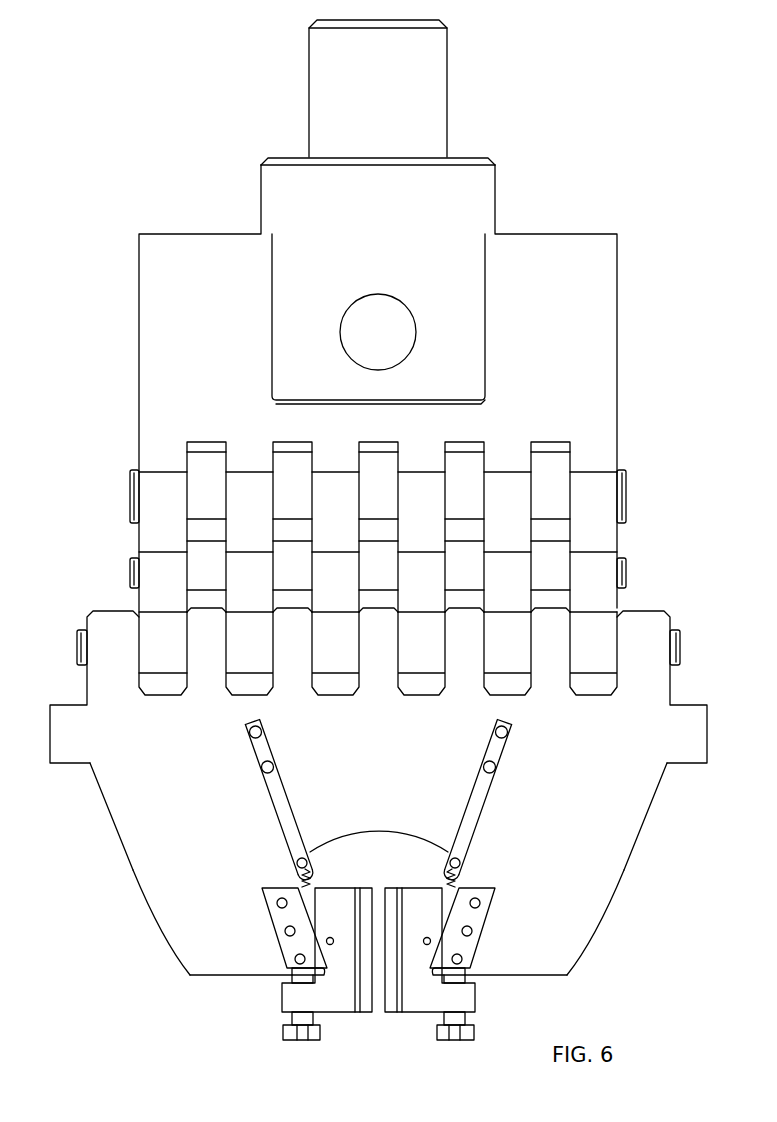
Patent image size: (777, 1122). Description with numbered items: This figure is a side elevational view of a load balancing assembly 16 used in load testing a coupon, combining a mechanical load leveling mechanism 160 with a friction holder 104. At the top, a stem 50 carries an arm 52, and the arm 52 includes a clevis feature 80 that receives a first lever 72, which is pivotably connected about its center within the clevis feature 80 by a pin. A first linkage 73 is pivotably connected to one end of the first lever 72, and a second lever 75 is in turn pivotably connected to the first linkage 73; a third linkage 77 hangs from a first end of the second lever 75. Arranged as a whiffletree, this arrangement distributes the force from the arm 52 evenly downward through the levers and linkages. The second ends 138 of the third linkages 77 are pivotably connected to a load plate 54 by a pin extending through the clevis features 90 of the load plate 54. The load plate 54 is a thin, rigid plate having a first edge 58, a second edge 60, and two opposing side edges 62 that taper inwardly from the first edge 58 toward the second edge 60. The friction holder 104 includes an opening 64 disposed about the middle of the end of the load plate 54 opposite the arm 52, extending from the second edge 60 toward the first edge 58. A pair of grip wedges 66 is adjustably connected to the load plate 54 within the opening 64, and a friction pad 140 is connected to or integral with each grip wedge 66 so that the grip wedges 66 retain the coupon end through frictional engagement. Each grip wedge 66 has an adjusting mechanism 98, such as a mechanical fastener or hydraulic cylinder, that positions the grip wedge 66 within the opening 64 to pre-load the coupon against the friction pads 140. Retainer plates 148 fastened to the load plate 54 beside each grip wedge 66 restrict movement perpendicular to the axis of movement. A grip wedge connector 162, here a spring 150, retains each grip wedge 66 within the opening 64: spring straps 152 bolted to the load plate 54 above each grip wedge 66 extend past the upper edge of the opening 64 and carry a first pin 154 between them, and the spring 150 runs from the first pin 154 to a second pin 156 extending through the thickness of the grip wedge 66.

The load balancing assembly 16 is at (622, 105).
The stem 50 is at (438, 86).
The arm 52 is at (608, 332).
The load plate 54 is at (109, 783).
The first edge 58 is at (652, 608).
The second edge 60 is at (218, 978).
The side edge 62 is at (130, 872).
The opening 64 is at (428, 838).
The grip wedge 66 is at (338, 1003).
The first lever 72 is at (560, 463).
The first linkage 73 is at (157, 504).
The second lever 75 is at (560, 549).
The third linkage 77 is at (153, 606).
The clevis feature 80 is at (207, 442).
The clevis feature 90 is at (160, 695).
The adjusting mechanism 98 is at (283, 1032).
The friction holder 104 is at (470, 980).
The second end 138 is at (150, 657).
The friction pad 140 is at (392, 887).
The retainer plate 148 is at (278, 917).
The spring 150 is at (310, 853).
The spring strap 152 is at (272, 790).
The first pin 154 is at (297, 860).
The second pin 156 is at (331, 937).
The load leveling mechanism 160 is at (617, 549).
The grip wedge connector 162 is at (298, 883).